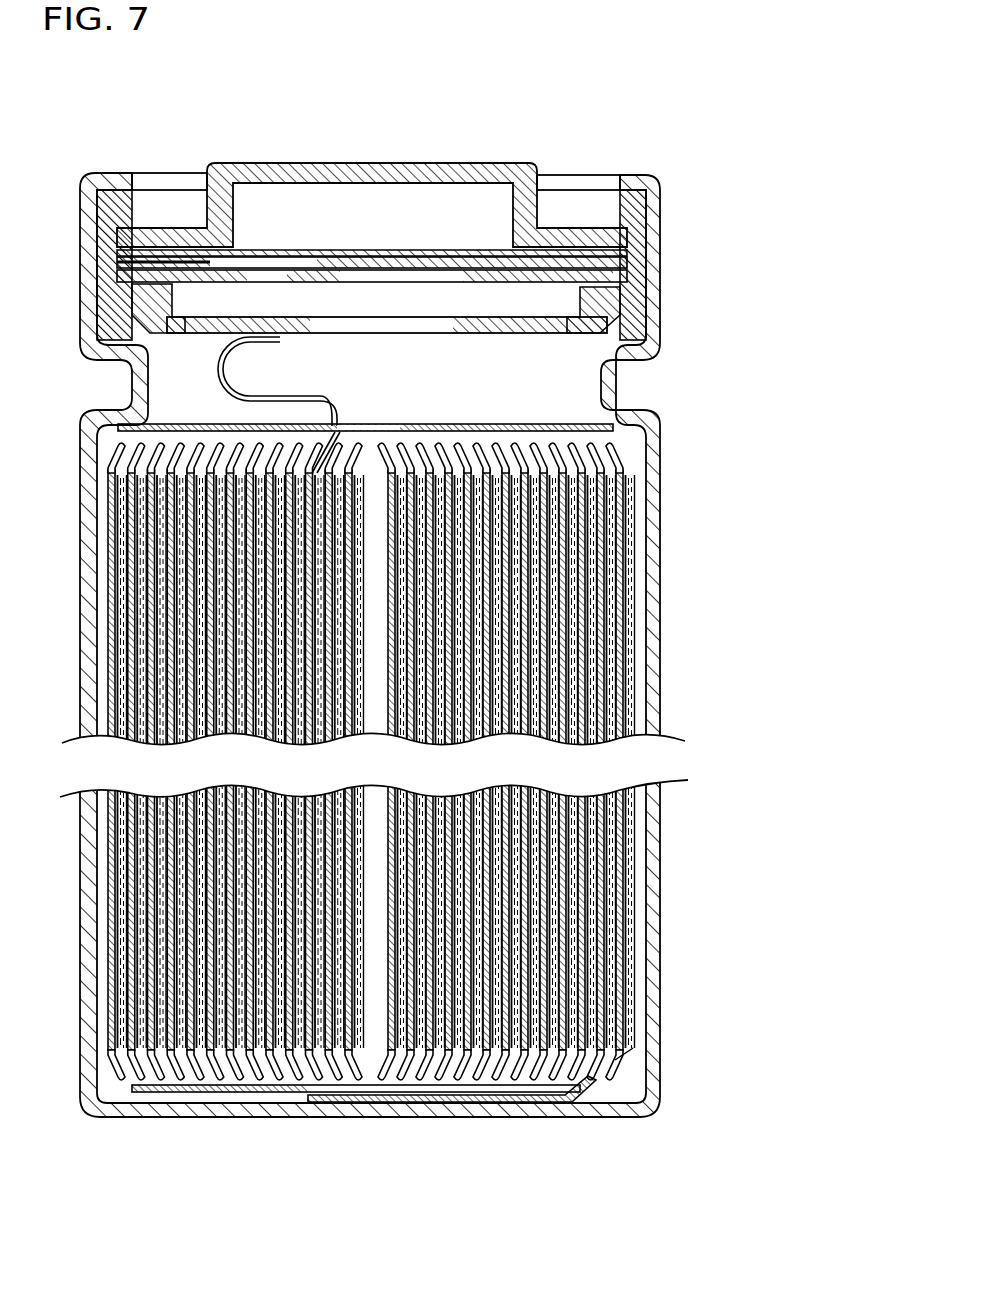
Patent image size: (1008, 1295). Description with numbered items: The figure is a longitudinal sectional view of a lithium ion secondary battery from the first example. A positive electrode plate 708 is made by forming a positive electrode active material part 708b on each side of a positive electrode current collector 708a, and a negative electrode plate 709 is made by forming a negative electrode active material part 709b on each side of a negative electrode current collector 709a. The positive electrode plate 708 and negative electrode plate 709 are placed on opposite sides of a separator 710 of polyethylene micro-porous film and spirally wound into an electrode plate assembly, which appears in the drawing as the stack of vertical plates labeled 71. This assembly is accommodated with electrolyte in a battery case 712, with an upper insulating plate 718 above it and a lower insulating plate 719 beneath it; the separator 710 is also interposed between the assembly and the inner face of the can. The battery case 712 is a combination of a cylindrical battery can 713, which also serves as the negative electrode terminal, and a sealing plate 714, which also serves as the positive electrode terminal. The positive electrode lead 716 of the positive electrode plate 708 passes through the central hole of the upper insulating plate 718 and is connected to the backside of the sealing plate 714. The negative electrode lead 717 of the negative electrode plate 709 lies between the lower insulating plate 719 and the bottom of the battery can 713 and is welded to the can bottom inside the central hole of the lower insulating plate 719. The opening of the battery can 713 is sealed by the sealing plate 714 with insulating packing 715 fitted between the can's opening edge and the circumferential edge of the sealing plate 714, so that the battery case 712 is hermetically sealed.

The electrode group 71 is at (482, 761).
The positive electrode plate 708 is at (714, 760).
The positive electrode current collector 708a is at (628, 673).
The positive electrode active material part 708b is at (620, 713).
The negative electrode plate 709 is at (705, 760).
The negative electrode current collector 709a is at (607, 593).
The negative electrode active material part 709b is at (607, 612).
The separator 710 is at (613, 1063).
The battery case 712 is at (681, 169).
The battery can 713 is at (97, 420).
The sealing plate 714 is at (362, 162).
The insulating packing 715 is at (643, 253).
The positive electrode lead 716 is at (223, 367).
The negative electrode lead 717 is at (587, 1088).
The upper insulating plate 718 is at (540, 423).
The lower insulating plate 719 is at (180, 1093).